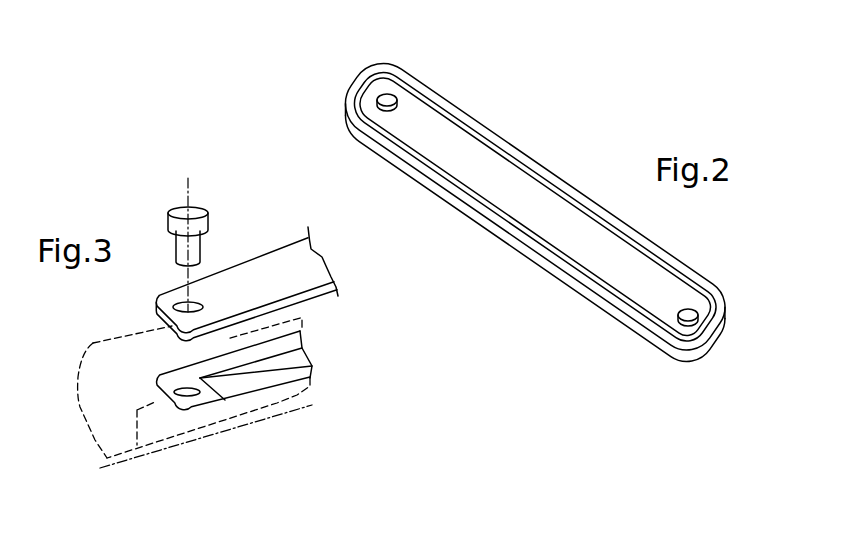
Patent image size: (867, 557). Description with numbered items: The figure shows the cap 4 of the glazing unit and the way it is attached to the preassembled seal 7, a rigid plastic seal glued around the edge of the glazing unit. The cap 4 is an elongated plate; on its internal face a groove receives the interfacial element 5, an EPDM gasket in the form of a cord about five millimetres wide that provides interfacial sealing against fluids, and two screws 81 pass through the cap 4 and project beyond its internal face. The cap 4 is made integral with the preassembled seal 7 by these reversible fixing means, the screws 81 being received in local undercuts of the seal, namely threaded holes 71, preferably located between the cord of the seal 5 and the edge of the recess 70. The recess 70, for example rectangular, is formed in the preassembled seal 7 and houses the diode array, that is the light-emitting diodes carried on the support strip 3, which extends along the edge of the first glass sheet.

In FIG. 2, the support strip 3 is at (512, 197).
In FIG. 2, the cap 4 is at (493, 140).
In FIG. 3, the cap 4 is at (284, 258).
In FIG. 2, the interfacial element 5 is at (553, 183).
In FIG. 2, the screws 81 is at (386, 94).
In FIG. 3, the screws 81 is at (180, 210).
In FIG. 3, the preassembled seal 7 is at (158, 432).
In FIG. 3, the recess 70 is at (304, 364).
In FIG. 3, the threaded holes 71 is at (186, 389).